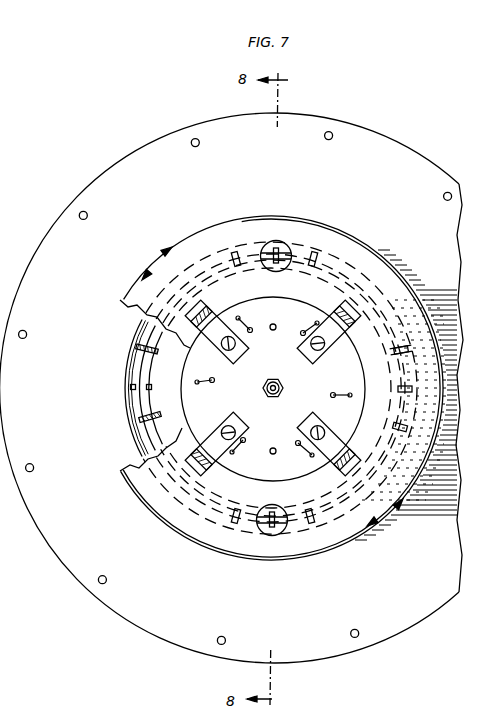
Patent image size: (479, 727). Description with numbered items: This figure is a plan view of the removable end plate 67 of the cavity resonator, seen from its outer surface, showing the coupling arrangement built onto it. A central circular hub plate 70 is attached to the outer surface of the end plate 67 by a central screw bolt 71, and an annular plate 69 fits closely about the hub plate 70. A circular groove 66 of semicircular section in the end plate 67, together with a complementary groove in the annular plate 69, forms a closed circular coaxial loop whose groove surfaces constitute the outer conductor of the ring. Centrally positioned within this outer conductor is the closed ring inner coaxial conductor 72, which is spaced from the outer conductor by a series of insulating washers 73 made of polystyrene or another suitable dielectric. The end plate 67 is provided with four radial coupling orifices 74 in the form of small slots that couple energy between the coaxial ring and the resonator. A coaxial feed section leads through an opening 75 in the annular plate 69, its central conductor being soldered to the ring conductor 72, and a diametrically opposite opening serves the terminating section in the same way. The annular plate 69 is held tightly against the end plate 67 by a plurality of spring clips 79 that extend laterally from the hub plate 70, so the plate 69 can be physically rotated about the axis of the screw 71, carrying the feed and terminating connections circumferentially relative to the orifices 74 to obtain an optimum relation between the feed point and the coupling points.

The circular groove 66 is at (135, 400).
The removable end plate 67 is at (371, 129).
The annular plate 69 is at (210, 547).
The central circular hub plate 70 is at (298, 312).
The central screw bolt 71 is at (284, 388).
The closed ring inner coaxial conductor 72 is at (138, 370).
The insulating washers 73 is at (236, 251).
The radial coupling orifices 74 is at (279, 250).
The opening 75 is at (270, 241).
The spring clips 79 is at (318, 325).